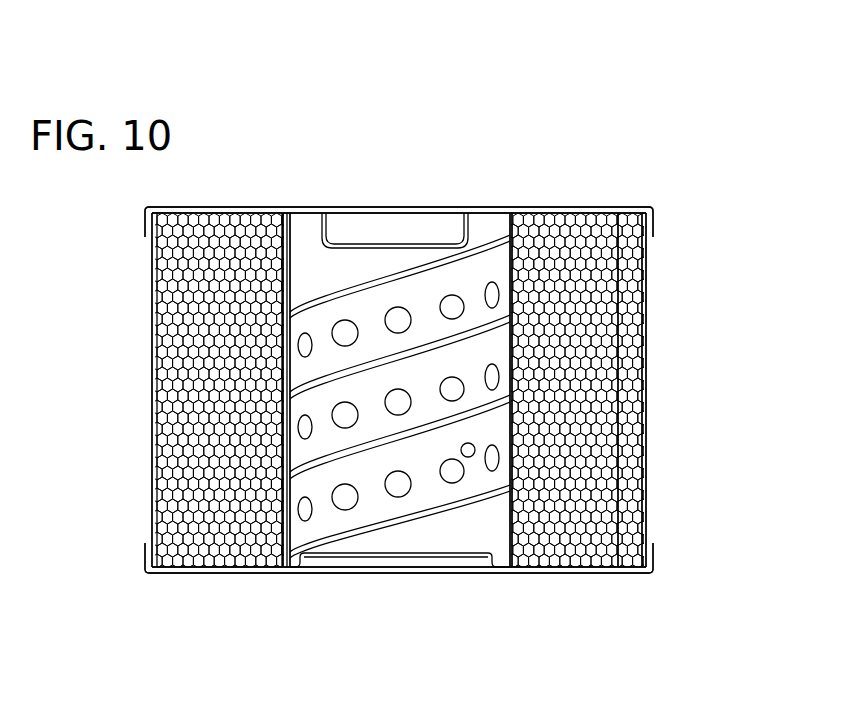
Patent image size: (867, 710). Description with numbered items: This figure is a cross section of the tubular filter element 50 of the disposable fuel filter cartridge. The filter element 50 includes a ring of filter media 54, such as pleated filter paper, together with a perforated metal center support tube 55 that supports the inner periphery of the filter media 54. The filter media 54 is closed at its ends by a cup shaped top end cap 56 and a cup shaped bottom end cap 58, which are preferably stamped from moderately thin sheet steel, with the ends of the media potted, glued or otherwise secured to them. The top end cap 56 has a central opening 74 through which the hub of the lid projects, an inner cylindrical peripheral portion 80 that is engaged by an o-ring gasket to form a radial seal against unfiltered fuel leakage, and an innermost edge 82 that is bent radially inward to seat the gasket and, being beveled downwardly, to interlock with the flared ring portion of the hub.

The filter element 50 is at (665, 160).
The filter media 54 is at (597, 410).
The center support tube 55 is at (287, 437).
The top end cap 56 is at (557, 207).
The bottom end cap 58 is at (569, 575).
The central opening 74 is at (446, 240).
The inner cylindrical peripheral portion 80 is at (333, 242).
The innermost edge 82 is at (352, 238).